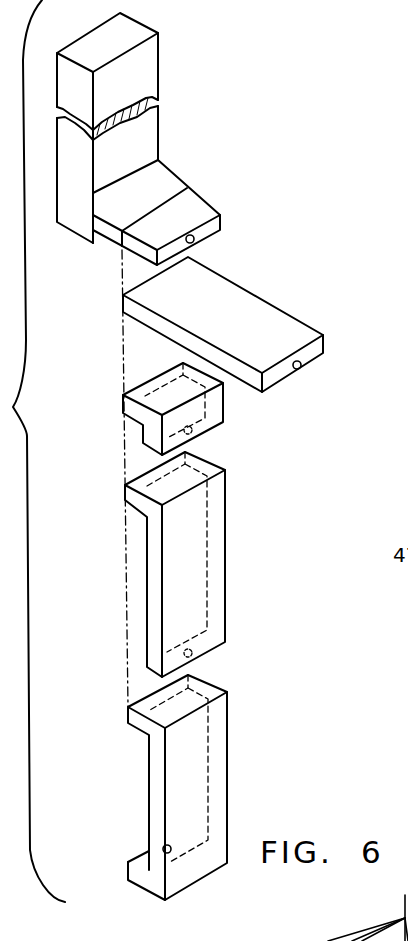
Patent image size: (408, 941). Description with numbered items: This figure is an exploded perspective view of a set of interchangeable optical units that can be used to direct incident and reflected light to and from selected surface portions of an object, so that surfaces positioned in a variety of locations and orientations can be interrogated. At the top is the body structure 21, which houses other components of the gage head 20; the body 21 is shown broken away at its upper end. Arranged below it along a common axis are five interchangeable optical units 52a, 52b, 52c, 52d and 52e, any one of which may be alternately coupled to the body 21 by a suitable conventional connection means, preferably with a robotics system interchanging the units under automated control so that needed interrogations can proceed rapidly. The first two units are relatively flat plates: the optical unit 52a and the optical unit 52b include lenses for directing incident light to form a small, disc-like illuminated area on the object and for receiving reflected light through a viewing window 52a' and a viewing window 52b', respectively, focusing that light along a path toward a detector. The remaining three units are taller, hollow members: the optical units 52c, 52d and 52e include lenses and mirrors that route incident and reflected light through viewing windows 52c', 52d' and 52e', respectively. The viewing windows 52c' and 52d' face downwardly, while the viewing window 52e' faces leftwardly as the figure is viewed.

The gage head 20 is at (171, 77).
The body structure 21 is at (161, 178).
The optical unit 52a is at (189, 204).
The viewing window 52a' is at (231, 246).
The optical unit 52b is at (241, 324).
The viewing window 52b' is at (335, 377).
The optical unit 52c is at (222, 409).
The viewing window 52c' is at (235, 444).
The optical unit 52d is at (216, 564).
The viewing window 52d' is at (234, 658).
The optical unit 52e is at (224, 787).
The viewing window 52e' is at (133, 832).